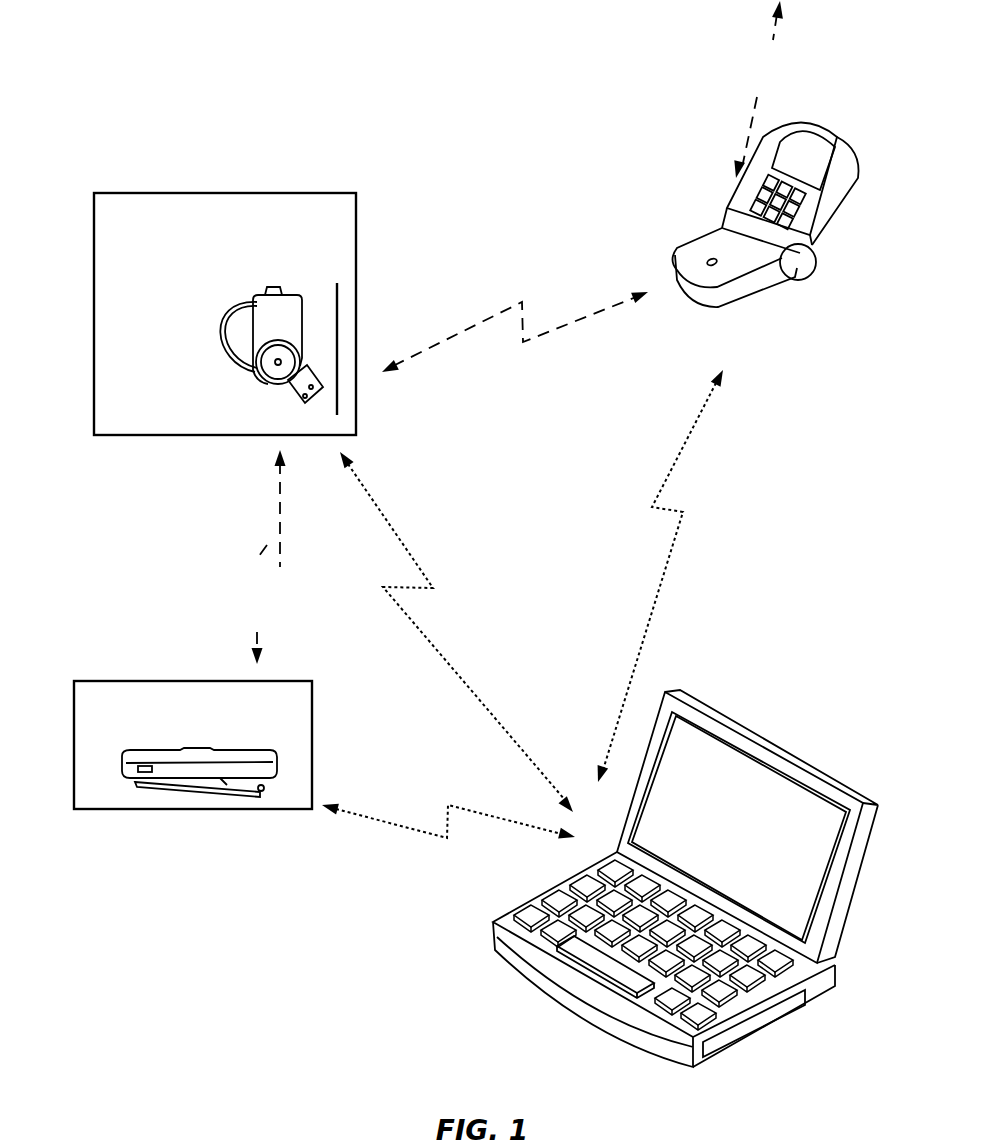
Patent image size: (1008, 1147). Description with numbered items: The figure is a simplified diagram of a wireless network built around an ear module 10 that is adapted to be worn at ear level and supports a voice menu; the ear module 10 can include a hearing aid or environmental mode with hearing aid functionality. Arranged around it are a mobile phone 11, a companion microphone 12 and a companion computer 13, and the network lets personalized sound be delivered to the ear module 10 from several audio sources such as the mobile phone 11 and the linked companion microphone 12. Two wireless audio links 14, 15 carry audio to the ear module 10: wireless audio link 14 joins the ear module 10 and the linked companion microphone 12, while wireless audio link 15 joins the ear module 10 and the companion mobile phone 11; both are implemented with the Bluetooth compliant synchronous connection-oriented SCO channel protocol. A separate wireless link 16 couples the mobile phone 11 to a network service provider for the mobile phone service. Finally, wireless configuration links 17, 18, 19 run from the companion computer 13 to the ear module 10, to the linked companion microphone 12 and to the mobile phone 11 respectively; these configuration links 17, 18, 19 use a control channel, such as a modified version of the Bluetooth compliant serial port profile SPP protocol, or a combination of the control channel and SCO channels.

The ear module 10 is at (133, 192).
The mobile phone 11 is at (803, 252).
The companion microphone 12 is at (163, 810).
The companion computer 13 is at (767, 747).
The wireless audio link 14 is at (280, 515).
The wireless audio link 15 is at (547, 333).
The wireless link 16 is at (750, 119).
The wireless configuration link 17 is at (393, 528).
The wireless configuration link 18 is at (390, 822).
The wireless configuration link 19 is at (673, 465).